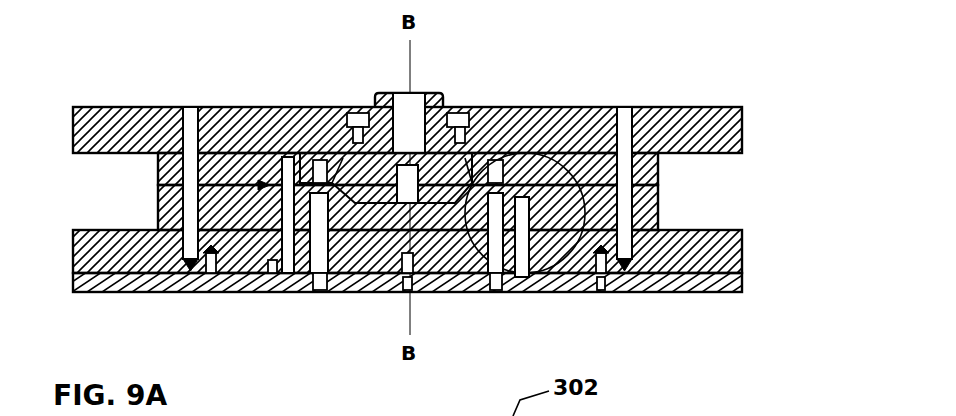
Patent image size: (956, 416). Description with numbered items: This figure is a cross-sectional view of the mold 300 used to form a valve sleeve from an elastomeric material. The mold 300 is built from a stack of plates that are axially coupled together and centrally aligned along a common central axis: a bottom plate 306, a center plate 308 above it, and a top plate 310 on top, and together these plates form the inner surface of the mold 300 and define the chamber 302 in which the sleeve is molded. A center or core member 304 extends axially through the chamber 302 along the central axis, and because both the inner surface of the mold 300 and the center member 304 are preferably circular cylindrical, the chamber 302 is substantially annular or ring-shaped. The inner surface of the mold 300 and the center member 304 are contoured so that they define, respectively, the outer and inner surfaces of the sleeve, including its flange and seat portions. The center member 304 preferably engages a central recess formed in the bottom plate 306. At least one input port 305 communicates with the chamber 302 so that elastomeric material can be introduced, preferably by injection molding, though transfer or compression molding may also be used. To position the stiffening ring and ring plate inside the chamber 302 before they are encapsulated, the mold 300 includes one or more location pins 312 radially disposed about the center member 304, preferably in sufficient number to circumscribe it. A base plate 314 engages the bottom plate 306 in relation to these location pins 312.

The mold 300 is at (130, 93).
The chamber 302 is at (517, 152).
The center or core member 304 is at (342, 178).
The input port 305 is at (413, 103).
The bottom plate 306 is at (648, 215).
The center plate 308 is at (655, 171).
The top plate 310 is at (665, 108).
The location pins 312 is at (560, 280).
The base plate 314 is at (723, 262).